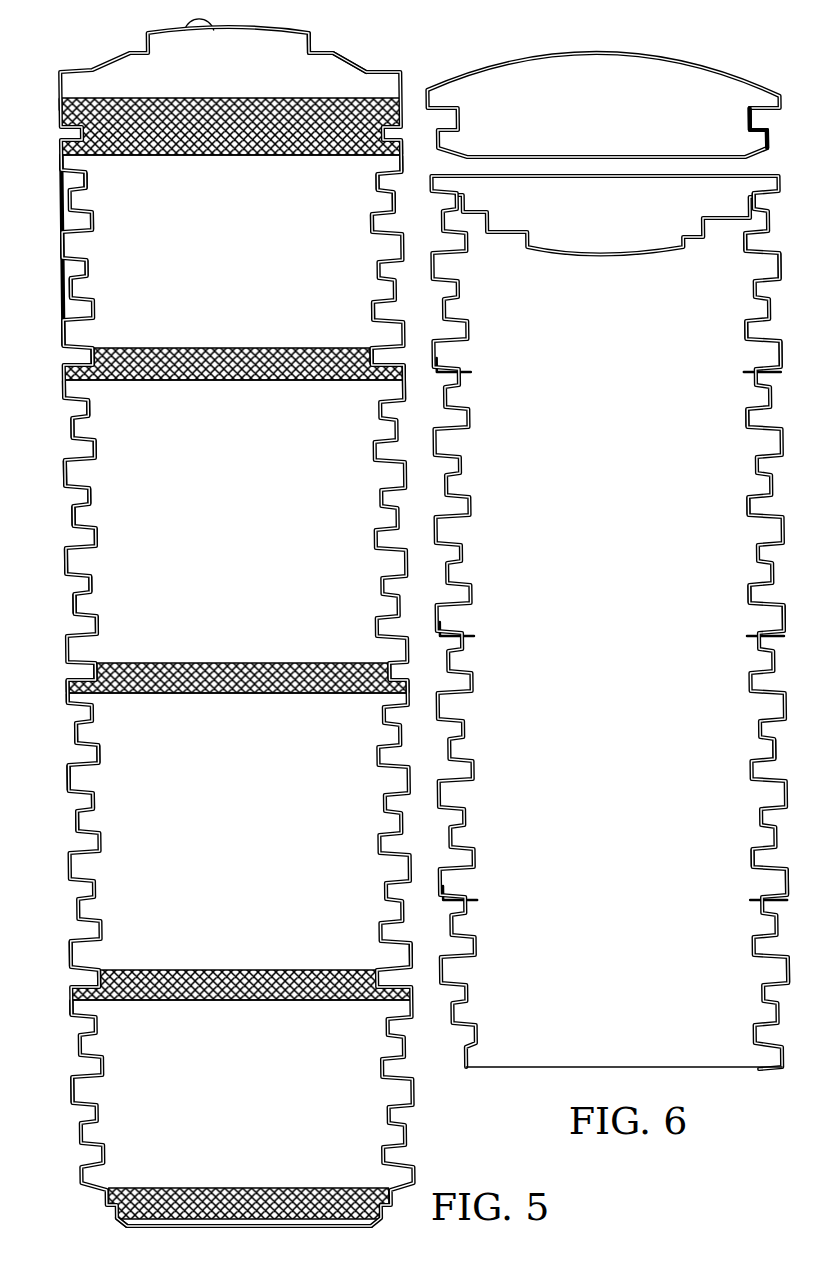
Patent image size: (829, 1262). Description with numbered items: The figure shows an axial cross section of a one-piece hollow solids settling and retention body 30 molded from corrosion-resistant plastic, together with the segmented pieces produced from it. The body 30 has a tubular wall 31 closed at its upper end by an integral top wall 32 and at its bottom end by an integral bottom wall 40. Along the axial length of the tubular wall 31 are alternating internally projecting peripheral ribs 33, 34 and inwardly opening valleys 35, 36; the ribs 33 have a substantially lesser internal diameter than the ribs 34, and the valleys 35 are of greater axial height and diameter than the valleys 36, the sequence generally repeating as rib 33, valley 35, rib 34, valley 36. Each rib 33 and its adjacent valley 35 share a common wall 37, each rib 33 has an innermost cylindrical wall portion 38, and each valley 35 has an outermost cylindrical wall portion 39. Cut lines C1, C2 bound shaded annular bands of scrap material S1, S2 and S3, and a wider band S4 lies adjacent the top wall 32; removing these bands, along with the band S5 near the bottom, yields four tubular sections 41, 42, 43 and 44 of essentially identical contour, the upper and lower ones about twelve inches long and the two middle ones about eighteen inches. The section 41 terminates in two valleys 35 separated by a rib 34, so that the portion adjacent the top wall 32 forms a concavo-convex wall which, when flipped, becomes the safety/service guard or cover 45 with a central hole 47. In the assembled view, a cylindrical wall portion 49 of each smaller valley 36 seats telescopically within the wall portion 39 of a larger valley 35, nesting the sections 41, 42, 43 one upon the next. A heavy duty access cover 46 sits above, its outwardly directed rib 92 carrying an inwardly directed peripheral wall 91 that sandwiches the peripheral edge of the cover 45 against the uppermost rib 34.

In FIG. 5, the hollow solids settling and retention body 30 is at (70, 612).
In FIG. 6, the hollow solids settling and retention body 30 is at (772, 510).
In FIG. 5, the tubular wall 31 is at (66, 462).
In FIG. 5, the top wall 32 is at (202, 33).
In FIG. 5, the internally projecting peripheral rib 33 is at (96, 215).
In FIG. 5, the internally projecting peripheral rib 34 is at (70, 161).
In FIG. 6, the internally projecting peripheral rib 34 is at (750, 218).
In FIG. 5, the inwardly opening valley 35 is at (66, 97).
In FIG. 5, the inwardly opening valley 36 is at (68, 332).
In FIG. 6, the inwardly opening valley 36 is at (744, 372).
In FIG. 5, the common wall 37 is at (68, 682).
In FIG. 5, the innermost cylindrical wall portion 38 is at (400, 364).
In FIG. 5, the outermost cylindrical wall portion 39 is at (68, 1003).
In FIG. 6, the outermost cylindrical wall portion 39 is at (784, 352).
In FIG. 5, the bottom wall 40 is at (112, 1224).
In FIG. 5, the tubular section 41 is at (62, 181).
In FIG. 6, the tubular section 41 is at (762, 241).
In FIG. 5, the tubular section 42 is at (71, 524).
In FIG. 6, the tubular section 42 is at (776, 420).
In FIG. 5, the tubular section 43 is at (70, 788).
In FIG. 6, the tubular section 43 is at (773, 755).
In FIG. 5, the tubular section 44 is at (68, 1102).
In FIG. 6, the tubular section 44 is at (784, 978).
In FIG. 5, the safety/service guard, closure or cover 45 is at (340, 52).
In FIG. 6, the safety/service guard, closure or cover 45 is at (611, 292).
In FIG. 6, the heavy duty access cover 46 is at (687, 61).
In FIG. 6, the central hole 47 is at (603, 255).
In FIG. 5, the cylindrical wall portion 49 is at (72, 290).
In FIG. 6, the cylindrical wall portion 49 is at (752, 346).
In FIG. 6, the inwardly directed peripheral wall 91 is at (752, 153).
In FIG. 6, the outwardly directed rib 92 is at (773, 137).
In FIG. 5, the annular band of scrap material S1 is at (227, 346).
In FIG. 5, the annular band of scrap material S2 is at (210, 662).
In FIG. 5, the annular band of scrap material S3 is at (216, 968).
In FIG. 5, the circumferential band of scrap material S4 is at (212, 96).
In FIG. 5, the scrap band S5 is at (204, 1185).
In FIG. 5, the cut line C1 is at (266, 98).
In FIG. 5, the cut line C2 is at (255, 156).